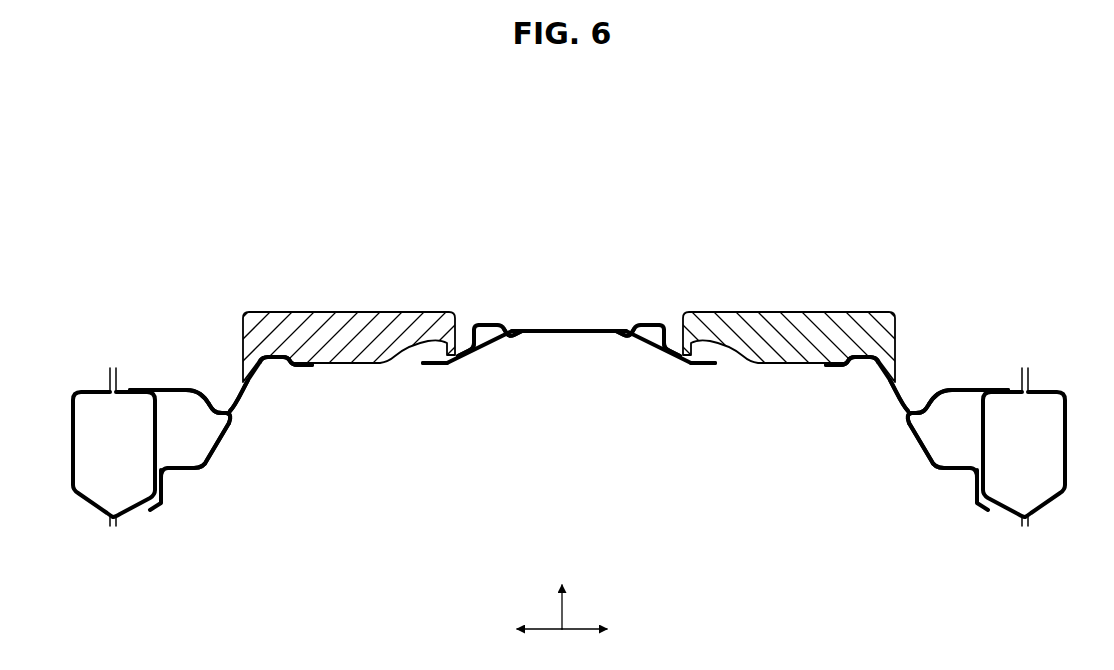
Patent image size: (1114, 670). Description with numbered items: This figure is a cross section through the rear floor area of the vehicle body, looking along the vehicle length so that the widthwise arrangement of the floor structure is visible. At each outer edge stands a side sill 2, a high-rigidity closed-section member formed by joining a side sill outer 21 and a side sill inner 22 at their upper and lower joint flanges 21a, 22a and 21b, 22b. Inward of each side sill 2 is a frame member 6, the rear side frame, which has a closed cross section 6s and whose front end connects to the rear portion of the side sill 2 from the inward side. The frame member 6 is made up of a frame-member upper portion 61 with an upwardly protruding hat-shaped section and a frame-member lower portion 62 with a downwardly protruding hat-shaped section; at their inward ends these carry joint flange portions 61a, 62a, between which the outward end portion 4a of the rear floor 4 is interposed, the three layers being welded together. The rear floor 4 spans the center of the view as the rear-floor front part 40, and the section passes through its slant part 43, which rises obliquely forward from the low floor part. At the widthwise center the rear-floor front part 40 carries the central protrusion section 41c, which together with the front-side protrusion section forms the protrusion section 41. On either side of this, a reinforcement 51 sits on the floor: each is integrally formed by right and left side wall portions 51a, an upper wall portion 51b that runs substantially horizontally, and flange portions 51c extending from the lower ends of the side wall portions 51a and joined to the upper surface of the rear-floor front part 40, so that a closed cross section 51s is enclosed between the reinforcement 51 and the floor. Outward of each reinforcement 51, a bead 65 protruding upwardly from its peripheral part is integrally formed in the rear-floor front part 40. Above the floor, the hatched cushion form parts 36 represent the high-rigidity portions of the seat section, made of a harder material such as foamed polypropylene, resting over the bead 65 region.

The side sill 2 is at (570, 488).
The side sill outer 21 is at (72, 440).
The upper joint flange of side sill outer 21a is at (108, 372).
The lower joint flange of side sill outer 21b is at (109, 526).
The side sill inner 22 is at (158, 457).
The upper joint flange of side sill inner 22a is at (118, 374).
The lower joint flange of side sill inner 22b is at (118, 526).
The rear floor 4 is at (569, 340).
The outward end portion of rear floor 4a is at (234, 405).
The rear-floor front part 40 is at (575, 335).
The protrusion section 41 is at (569, 287).
The central protrusion section 41c is at (566, 328).
The slant part 43 is at (434, 367).
The reinforcement 51 is at (498, 320).
The side wall portion 51a is at (472, 321).
The upper wall portion 51b is at (487, 321).
The flange portion 51c is at (508, 337).
The closed cross section of reinforcement 51s is at (490, 340).
The frame member 6 is at (214, 447).
The closed cross section of frame member 6s is at (169, 434).
The frame-member upper portion 61 is at (165, 390).
The joint flange portion of frame-member upper portion 61a is at (222, 410).
The frame-member lower portion 62 is at (200, 469).
The joint flange portion of frame-member lower portion 62a is at (226, 425).
The bead 65 is at (275, 361).
The cushion form part 36 is at (307, 311).